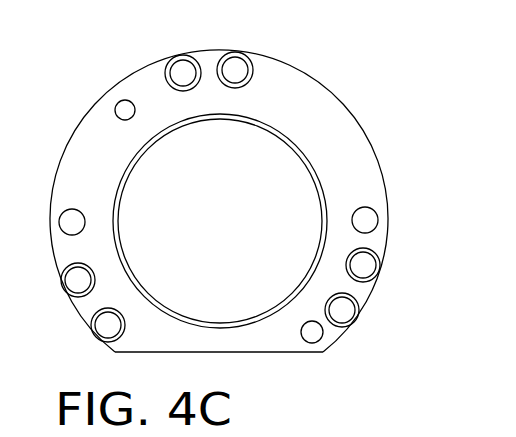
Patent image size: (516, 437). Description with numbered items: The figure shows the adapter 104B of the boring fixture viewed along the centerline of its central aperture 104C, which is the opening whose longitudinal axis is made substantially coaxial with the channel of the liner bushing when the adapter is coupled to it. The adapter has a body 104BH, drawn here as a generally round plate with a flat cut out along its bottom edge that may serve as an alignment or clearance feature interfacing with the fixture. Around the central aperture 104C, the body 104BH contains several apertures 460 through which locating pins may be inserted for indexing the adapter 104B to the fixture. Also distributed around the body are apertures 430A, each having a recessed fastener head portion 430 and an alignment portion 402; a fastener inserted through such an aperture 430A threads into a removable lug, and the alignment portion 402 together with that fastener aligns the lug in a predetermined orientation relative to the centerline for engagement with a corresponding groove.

The adapter 104B is at (248, 182).
The body 104BH is at (337, 96).
The aperture 104C is at (207, 292).
The recessed fastener head portion 430 is at (243, 53).
The aperture 430A is at (367, 283).
The alignment portion 402 is at (240, 74).
The apertures 460 is at (122, 102).